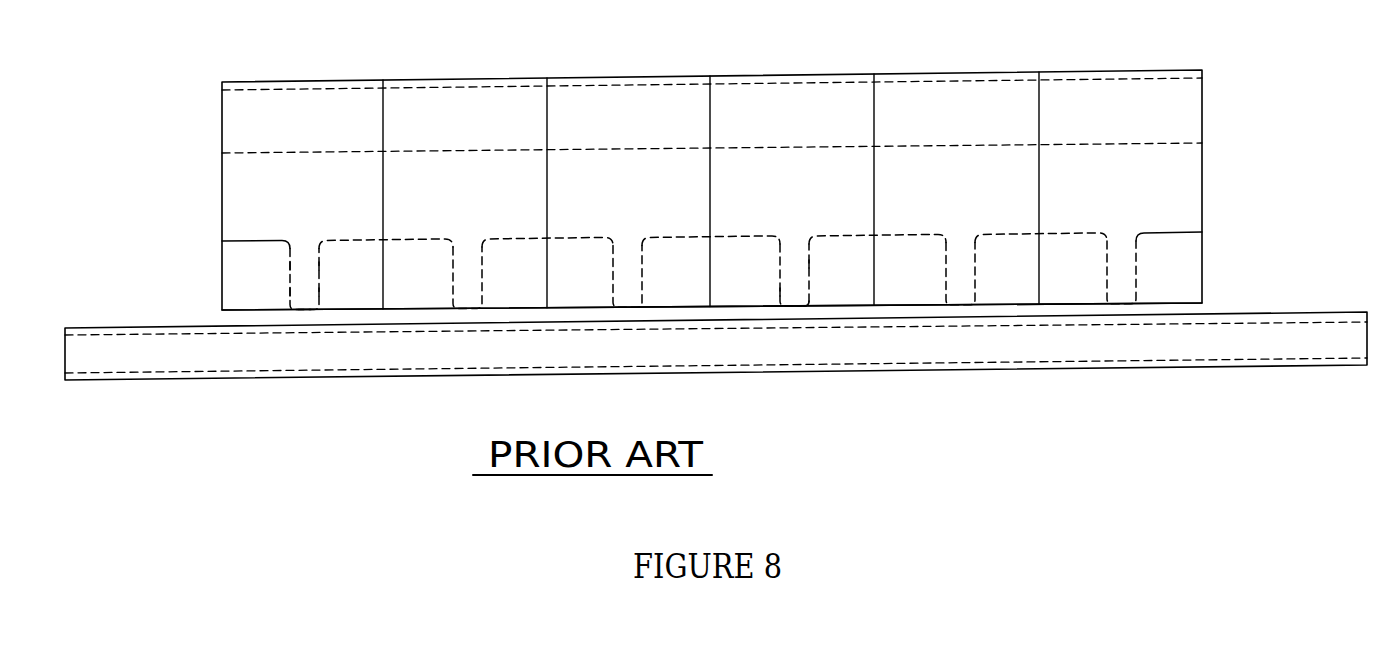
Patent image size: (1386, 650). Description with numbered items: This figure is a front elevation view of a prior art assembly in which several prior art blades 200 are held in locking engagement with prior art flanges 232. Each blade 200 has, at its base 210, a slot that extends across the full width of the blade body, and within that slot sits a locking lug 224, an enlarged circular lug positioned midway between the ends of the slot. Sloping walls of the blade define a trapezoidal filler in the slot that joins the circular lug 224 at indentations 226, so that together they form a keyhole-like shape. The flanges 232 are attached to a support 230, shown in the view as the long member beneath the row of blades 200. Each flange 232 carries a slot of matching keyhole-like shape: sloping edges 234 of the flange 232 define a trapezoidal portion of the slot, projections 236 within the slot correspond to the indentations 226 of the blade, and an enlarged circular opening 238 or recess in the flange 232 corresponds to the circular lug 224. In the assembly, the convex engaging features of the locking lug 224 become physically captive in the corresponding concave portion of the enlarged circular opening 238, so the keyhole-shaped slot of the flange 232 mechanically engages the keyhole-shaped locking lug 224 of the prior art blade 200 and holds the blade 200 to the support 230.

The prior art blade 200 is at (315, 75).
The base 210 is at (262, 312).
The locking lug 224 is at (803, 298).
The indentations 226 is at (296, 286).
The support 230 is at (135, 327).
The flange 232 is at (249, 241).
The sloping edges 234 is at (320, 258).
The projections 236 is at (298, 280).
The enlarged circular opening 238 is at (312, 303).